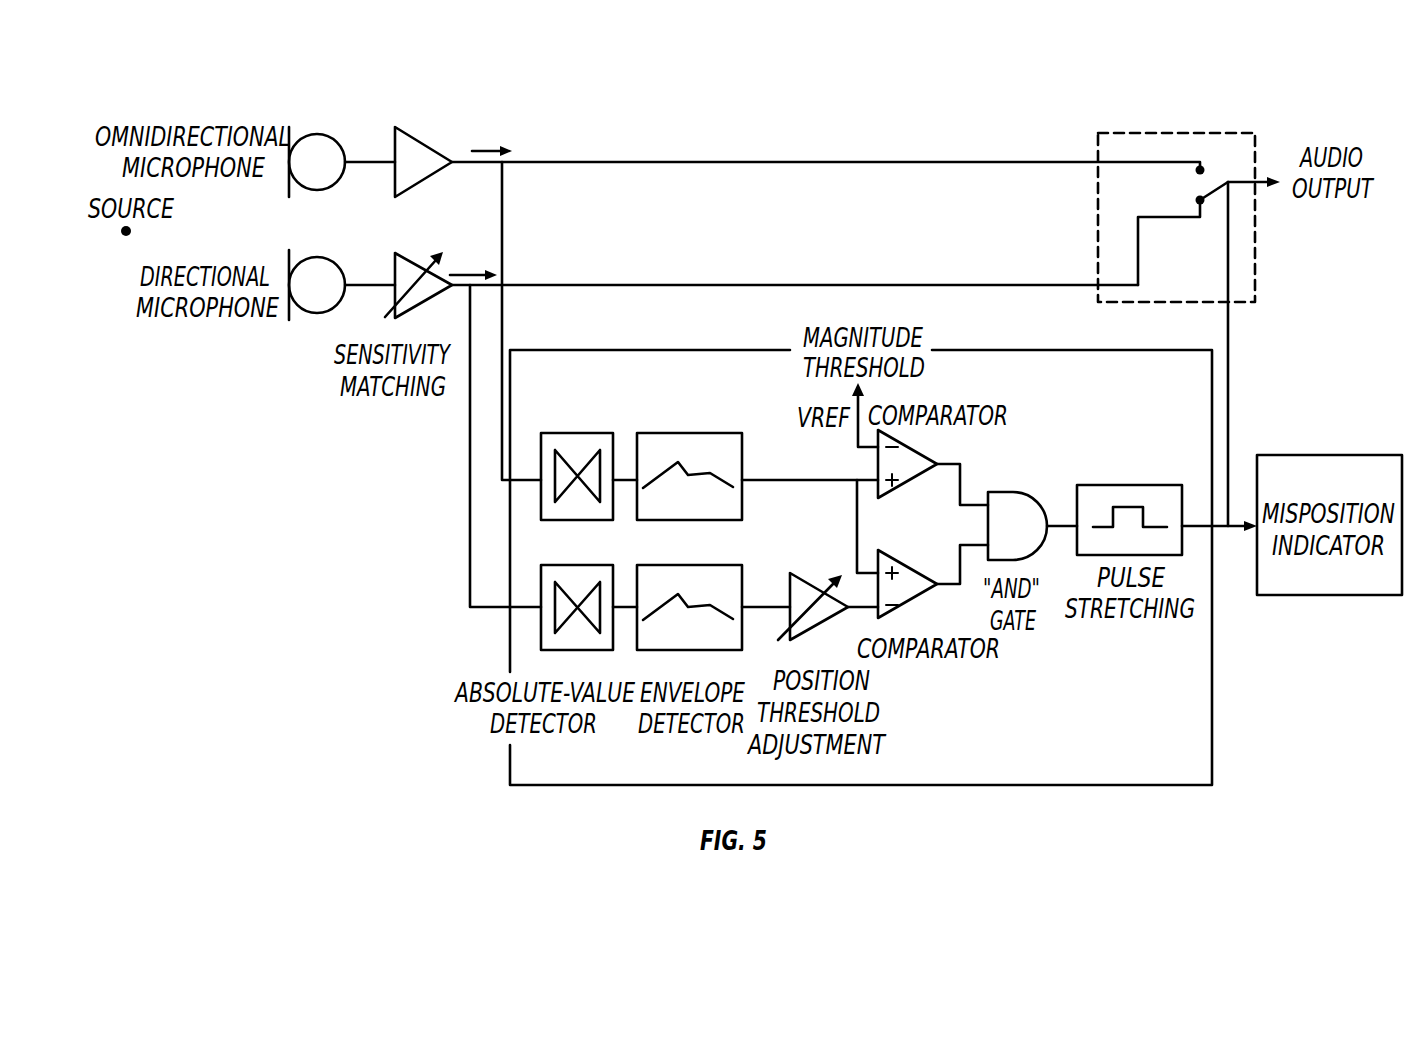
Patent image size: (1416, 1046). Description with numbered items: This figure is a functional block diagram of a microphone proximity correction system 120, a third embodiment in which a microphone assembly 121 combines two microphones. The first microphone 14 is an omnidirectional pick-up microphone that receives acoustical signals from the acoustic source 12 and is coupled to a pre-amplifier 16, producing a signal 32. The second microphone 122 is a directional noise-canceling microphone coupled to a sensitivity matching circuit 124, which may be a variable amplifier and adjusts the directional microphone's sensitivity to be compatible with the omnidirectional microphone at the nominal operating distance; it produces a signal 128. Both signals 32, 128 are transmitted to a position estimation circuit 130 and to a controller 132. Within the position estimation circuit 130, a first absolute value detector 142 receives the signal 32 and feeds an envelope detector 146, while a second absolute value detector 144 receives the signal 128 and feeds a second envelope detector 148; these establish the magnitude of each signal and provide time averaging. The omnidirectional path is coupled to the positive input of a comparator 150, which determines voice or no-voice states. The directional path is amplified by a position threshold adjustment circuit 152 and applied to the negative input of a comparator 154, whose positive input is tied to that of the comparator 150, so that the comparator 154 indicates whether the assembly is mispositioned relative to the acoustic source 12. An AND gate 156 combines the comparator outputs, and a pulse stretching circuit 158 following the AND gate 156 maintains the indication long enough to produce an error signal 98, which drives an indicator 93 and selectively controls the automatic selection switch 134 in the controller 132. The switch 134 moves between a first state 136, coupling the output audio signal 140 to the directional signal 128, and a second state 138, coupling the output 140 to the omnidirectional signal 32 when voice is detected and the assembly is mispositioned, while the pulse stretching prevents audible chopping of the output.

The acoustic source 12 is at (124, 233).
The first microphone 14 is at (317, 134).
The pre-amplifier 16 is at (428, 143).
The signal 32 is at (494, 153).
The indicator 93 is at (1360, 596).
The error signal 98 is at (1232, 397).
The microphone proximity correction system 120 is at (272, 650).
The microphone assembly 121 is at (188, 372).
The second microphone 122 is at (309, 318).
The sensitivity matching circuit 124 is at (370, 400).
The signal 128 is at (468, 274).
The position estimation circuit 130 is at (1125, 785).
The controller 132 is at (1200, 132).
The automatic selection switch 134 is at (1232, 185).
The first state 136 is at (1198, 198).
The second state 138 is at (1203, 170).
The output audio signal 140 is at (1338, 205).
The first absolute value detector 142 is at (615, 420).
The second absolute value detector 144 is at (541, 613).
The envelope detector 146 is at (732, 420).
The second envelope detector 148 is at (742, 580).
The comparator 150 is at (924, 456).
The position threshold adjustment circuit 152 is at (845, 758).
The comparator 154 is at (950, 664).
The AND gate 156 is at (1022, 638).
The pulse stretching circuit 158 is at (1123, 632).